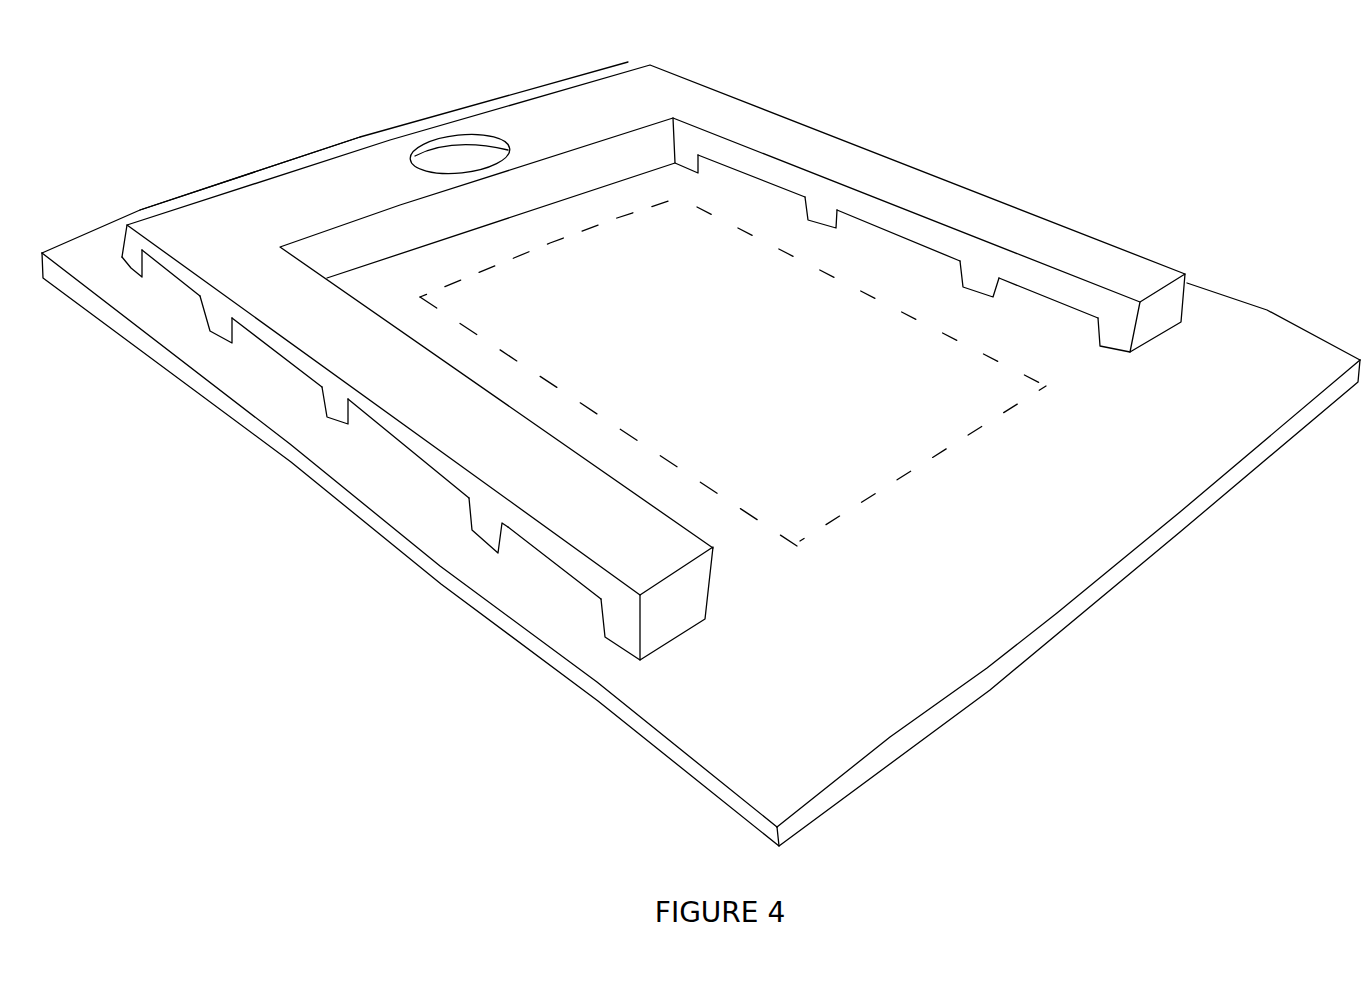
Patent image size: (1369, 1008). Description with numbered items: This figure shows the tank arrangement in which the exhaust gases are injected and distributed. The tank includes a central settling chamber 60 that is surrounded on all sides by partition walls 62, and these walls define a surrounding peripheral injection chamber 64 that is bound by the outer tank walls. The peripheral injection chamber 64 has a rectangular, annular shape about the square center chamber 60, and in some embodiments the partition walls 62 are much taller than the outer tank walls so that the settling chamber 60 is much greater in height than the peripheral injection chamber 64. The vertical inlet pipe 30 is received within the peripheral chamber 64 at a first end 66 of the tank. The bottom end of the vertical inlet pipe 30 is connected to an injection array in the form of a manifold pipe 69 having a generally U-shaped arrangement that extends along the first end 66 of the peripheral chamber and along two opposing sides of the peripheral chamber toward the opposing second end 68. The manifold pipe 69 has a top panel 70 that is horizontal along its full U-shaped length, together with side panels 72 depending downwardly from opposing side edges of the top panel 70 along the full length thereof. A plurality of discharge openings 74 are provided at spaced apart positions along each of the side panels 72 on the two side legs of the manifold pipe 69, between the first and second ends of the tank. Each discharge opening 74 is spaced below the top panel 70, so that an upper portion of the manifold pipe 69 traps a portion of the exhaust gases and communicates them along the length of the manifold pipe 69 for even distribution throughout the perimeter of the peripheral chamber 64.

The vertical inlet pipe 30 is at (458, 165).
The central settling chamber 60 is at (785, 378).
The partition walls 62 is at (597, 228).
The peripheral injection chamber 64 is at (815, 672).
The first end 66 is at (680, 60).
The second end 68 is at (1308, 278).
The manifold pipe 69 is at (292, 208).
The top panel 70 is at (530, 128).
The side panels 72 is at (575, 173).
The discharge openings 74 is at (880, 232).